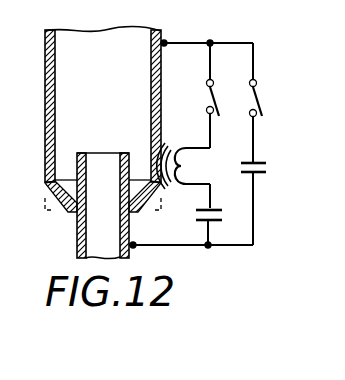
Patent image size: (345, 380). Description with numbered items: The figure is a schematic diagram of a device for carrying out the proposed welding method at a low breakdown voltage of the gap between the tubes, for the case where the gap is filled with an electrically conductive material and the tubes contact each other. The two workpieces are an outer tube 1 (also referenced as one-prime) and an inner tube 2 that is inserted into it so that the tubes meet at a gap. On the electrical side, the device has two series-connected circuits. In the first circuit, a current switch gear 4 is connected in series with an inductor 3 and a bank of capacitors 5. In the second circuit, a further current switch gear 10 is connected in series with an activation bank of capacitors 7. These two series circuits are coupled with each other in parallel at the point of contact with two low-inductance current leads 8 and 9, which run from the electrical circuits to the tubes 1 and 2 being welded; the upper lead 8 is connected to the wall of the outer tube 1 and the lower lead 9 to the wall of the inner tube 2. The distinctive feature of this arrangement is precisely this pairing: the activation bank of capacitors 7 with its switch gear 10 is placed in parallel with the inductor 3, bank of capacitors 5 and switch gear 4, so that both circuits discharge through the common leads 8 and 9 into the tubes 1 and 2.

The tube 1 is at (45, 80).
The tube 2 is at (77, 232).
The inductor 3 is at (183, 175).
The current switch gear 4 is at (207, 98).
The bank of capacitors 5 is at (218, 224).
The activation bank of capacitors 7 is at (262, 201).
The low-inductance current lead 8 is at (195, 41).
The low-inductance current lead 9 is at (166, 245).
The current switch gear 10 is at (258, 97).